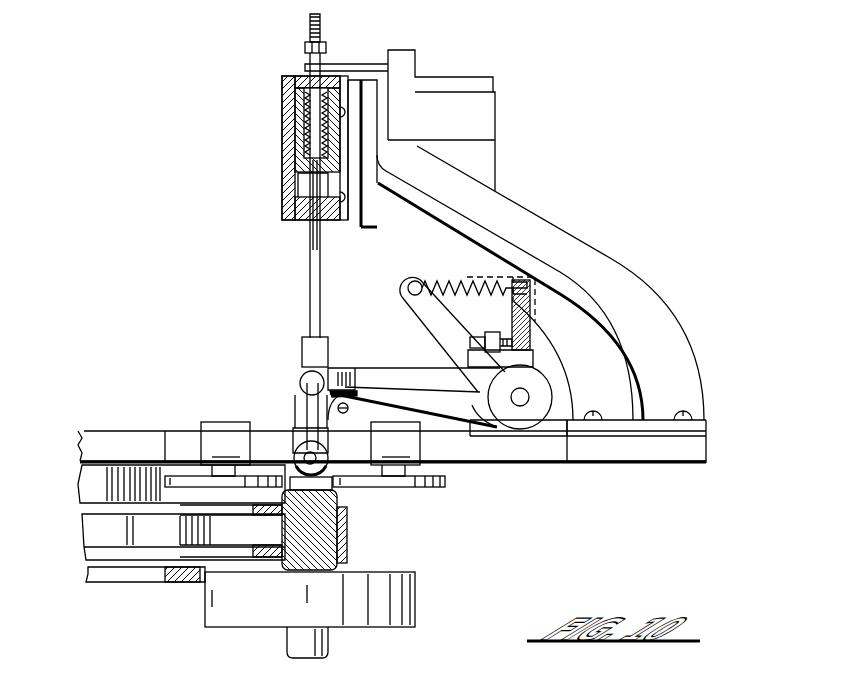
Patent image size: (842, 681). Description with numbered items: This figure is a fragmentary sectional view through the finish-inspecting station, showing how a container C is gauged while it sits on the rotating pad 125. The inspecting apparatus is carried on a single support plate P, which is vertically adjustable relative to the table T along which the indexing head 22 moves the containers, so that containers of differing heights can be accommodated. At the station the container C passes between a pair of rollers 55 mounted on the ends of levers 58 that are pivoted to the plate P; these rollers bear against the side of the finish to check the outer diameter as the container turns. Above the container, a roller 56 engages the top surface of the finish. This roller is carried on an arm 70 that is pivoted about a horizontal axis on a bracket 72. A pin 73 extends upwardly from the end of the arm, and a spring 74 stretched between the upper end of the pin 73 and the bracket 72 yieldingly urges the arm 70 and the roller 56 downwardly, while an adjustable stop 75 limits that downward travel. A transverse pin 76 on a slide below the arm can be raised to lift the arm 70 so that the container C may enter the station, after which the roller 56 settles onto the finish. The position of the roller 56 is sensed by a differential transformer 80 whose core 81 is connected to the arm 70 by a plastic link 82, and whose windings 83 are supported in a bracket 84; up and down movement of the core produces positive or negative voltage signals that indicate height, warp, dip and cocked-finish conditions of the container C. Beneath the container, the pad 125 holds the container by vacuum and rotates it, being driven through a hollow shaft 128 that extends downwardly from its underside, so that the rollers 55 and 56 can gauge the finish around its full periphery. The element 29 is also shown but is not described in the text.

The differential transformer 80 is at (268, 156).
The core 81 is at (312, 127).
The plastic link 82 is at (308, 263).
The windings 83 is at (296, 95).
The bracket 84 is at (532, 222).
The arm 70 is at (380, 373).
The bracket 72 is at (425, 308).
The pin 73 is at (517, 322).
The spring 74 is at (432, 283).
The adjustable stop 75 is at (470, 340).
The transverse pin 76 is at (348, 408).
The rollers 55 is at (183, 478).
The roller 56 is at (292, 428).
The levers 58 is at (310, 449).
The indexing head 22 is at (64, 485).
The support plate P is at (90, 440).
The table T is at (100, 572).
The container C is at (323, 527).
The collar 29 is at (323, 547).
The pad 125 is at (220, 613).
The hollow shaft 128 is at (300, 648).